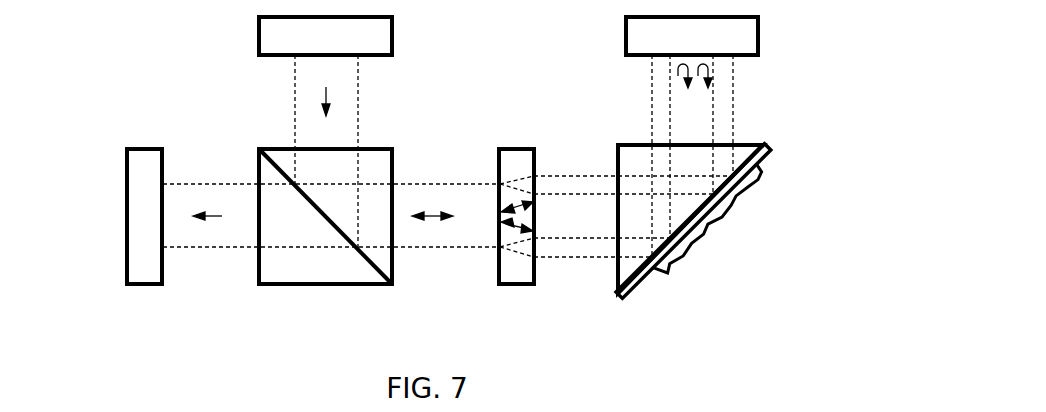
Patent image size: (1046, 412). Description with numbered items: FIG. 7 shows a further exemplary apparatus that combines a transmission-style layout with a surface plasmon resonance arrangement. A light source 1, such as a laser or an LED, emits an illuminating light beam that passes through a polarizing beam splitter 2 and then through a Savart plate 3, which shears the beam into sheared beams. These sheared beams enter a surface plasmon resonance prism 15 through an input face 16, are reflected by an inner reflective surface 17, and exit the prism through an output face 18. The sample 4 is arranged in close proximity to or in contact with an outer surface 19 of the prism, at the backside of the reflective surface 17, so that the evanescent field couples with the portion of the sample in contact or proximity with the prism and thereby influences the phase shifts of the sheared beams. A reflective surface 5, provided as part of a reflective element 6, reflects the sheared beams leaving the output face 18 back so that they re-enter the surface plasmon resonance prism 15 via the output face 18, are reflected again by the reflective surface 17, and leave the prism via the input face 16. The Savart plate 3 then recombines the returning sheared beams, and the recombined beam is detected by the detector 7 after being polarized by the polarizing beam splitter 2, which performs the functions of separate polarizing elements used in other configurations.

The light source 1 is at (240, 33).
The polarizing beam splitter 2 is at (373, 296).
The Savart plate 3 is at (527, 132).
The sample 4 is at (740, 208).
The reflective surface 5 is at (633, 56).
The reflective element 6 is at (780, 40).
The detector 7 is at (103, 243).
The surface plasmon resonance prism 15 is at (780, 174).
The input face 16 is at (616, 270).
The reflective surface 17 is at (752, 145).
The output face 18 is at (622, 146).
The outer surface 19 is at (642, 284).